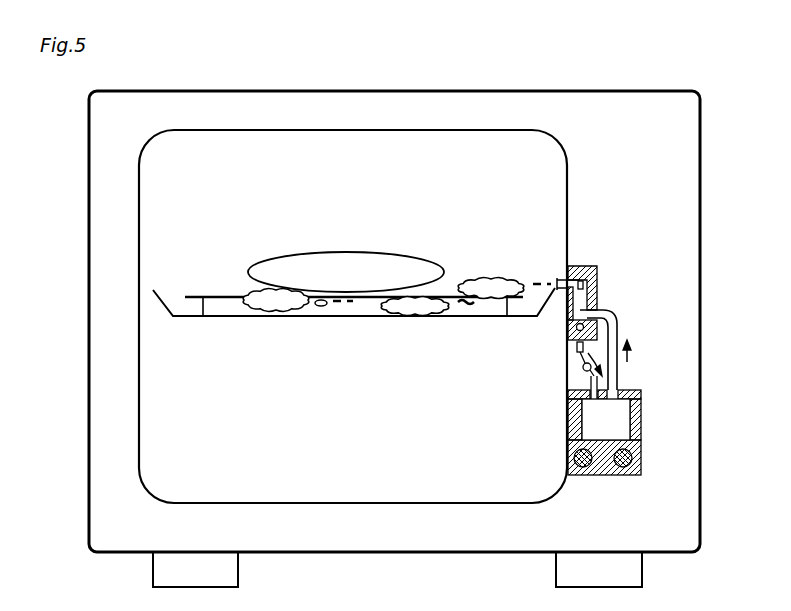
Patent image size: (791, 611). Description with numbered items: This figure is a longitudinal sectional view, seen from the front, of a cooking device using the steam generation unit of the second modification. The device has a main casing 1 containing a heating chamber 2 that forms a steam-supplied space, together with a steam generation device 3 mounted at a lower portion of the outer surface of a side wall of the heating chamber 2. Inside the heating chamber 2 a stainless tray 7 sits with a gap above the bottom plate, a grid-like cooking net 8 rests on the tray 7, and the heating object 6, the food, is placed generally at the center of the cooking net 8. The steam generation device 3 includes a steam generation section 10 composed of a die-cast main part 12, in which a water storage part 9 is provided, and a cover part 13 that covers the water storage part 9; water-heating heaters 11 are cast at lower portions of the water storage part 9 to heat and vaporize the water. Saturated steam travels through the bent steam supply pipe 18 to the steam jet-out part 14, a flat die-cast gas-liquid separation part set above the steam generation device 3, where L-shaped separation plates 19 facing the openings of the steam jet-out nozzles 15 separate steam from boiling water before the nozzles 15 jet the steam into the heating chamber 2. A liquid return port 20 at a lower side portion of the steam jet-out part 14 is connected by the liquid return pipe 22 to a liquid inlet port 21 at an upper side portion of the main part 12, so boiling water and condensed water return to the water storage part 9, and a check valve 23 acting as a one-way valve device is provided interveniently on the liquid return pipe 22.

The main casing 1 is at (89, 158).
The heating chamber 2 is at (567, 175).
The steam generation device 3 is at (641, 370).
The heating object 6 is at (345, 251).
The tray 7 is at (312, 318).
The cooking net 8 is at (215, 295).
The water storage part 9 is at (622, 433).
The steam generation section 10 is at (643, 466).
The water-heating heater 11 is at (583, 478).
The main part 12 is at (642, 418).
The cover part 13 is at (642, 393).
The steam jet-out part 14 is at (585, 266).
The steam jet-out nozzle 15 is at (560, 280).
The steam supply pipe 18 is at (620, 330).
The separation plate 19 is at (597, 287).
The liquid return port 20 is at (577, 327).
The liquid inlet port 21 is at (588, 410).
The liquid return pipe 22 is at (577, 346).
The check valve 23 is at (583, 370).